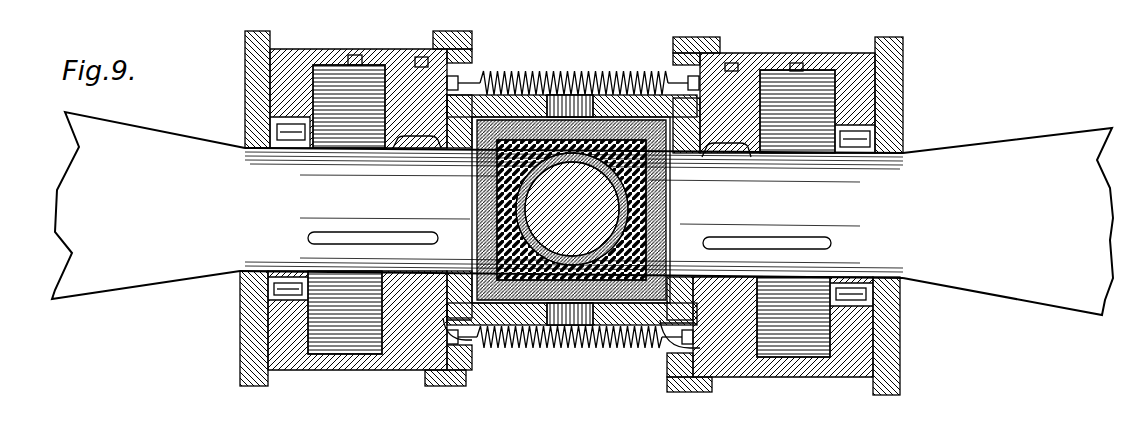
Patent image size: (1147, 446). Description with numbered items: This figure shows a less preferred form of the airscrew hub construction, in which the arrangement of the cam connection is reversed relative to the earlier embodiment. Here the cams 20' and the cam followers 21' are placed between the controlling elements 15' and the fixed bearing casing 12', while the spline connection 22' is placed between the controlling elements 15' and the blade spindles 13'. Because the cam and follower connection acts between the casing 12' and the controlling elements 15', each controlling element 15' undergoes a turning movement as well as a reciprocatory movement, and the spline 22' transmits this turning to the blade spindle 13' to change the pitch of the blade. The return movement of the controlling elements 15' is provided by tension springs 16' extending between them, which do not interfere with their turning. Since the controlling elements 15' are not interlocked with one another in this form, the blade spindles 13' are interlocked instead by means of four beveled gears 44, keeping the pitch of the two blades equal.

The casing 12' is at (577, 213).
The blade spindle 13' is at (582, 213).
The controlling element 15' is at (571, 211).
The tension spring 16' is at (572, 211).
The cam 20' is at (589, 50).
The cam follower 21' is at (569, 188).
The spline 22' is at (572, 236).
The beveled gear 44 is at (535, 120).